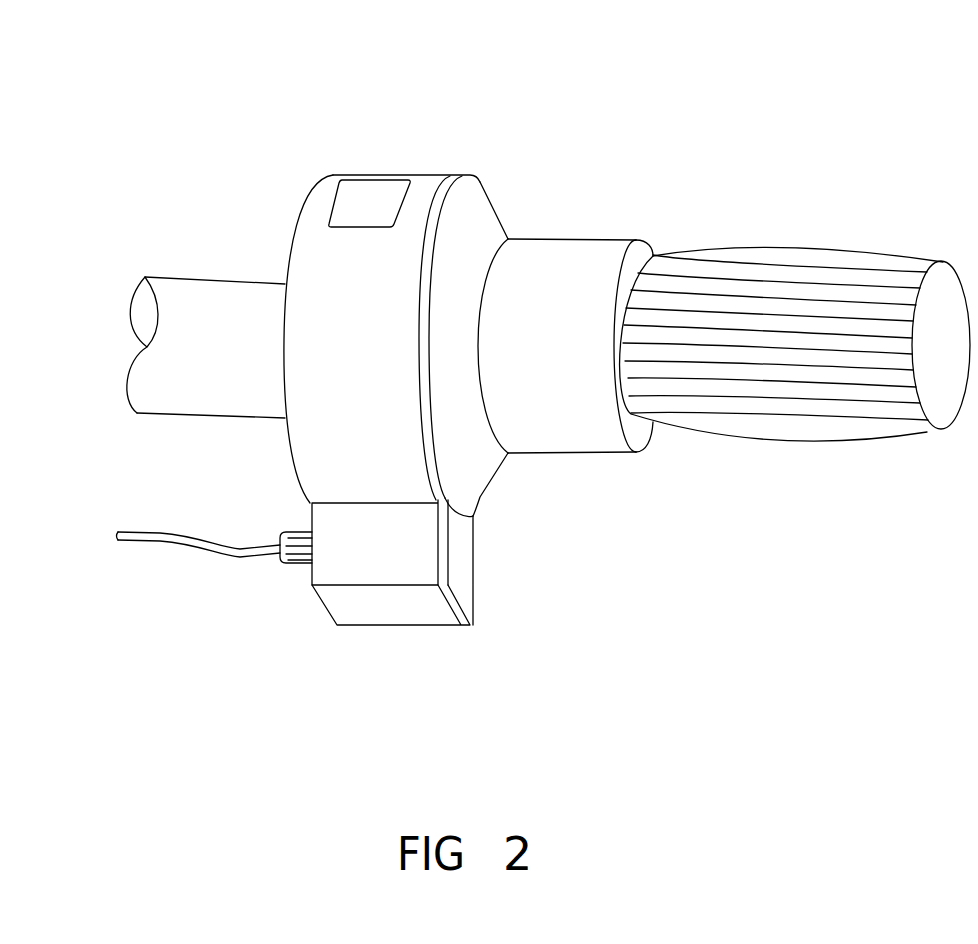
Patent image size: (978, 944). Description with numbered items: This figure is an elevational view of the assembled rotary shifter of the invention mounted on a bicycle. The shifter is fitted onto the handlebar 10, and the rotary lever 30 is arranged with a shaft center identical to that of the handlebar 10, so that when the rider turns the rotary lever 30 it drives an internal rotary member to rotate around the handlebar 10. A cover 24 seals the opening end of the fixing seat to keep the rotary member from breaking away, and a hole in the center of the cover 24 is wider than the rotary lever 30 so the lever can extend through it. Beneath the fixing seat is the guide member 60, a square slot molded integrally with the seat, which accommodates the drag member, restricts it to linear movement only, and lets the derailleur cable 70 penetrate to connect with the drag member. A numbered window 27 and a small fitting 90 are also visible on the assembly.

The handlebar 10 is at (222, 292).
The rotatable dial with numeral window 27 is at (348, 202).
The cover 24 is at (474, 205).
The rotary lever 30 is at (567, 260).
The guide member 60 is at (343, 562).
The cable connector knob 90 is at (285, 565).
The derailleur cable 70 is at (172, 545).